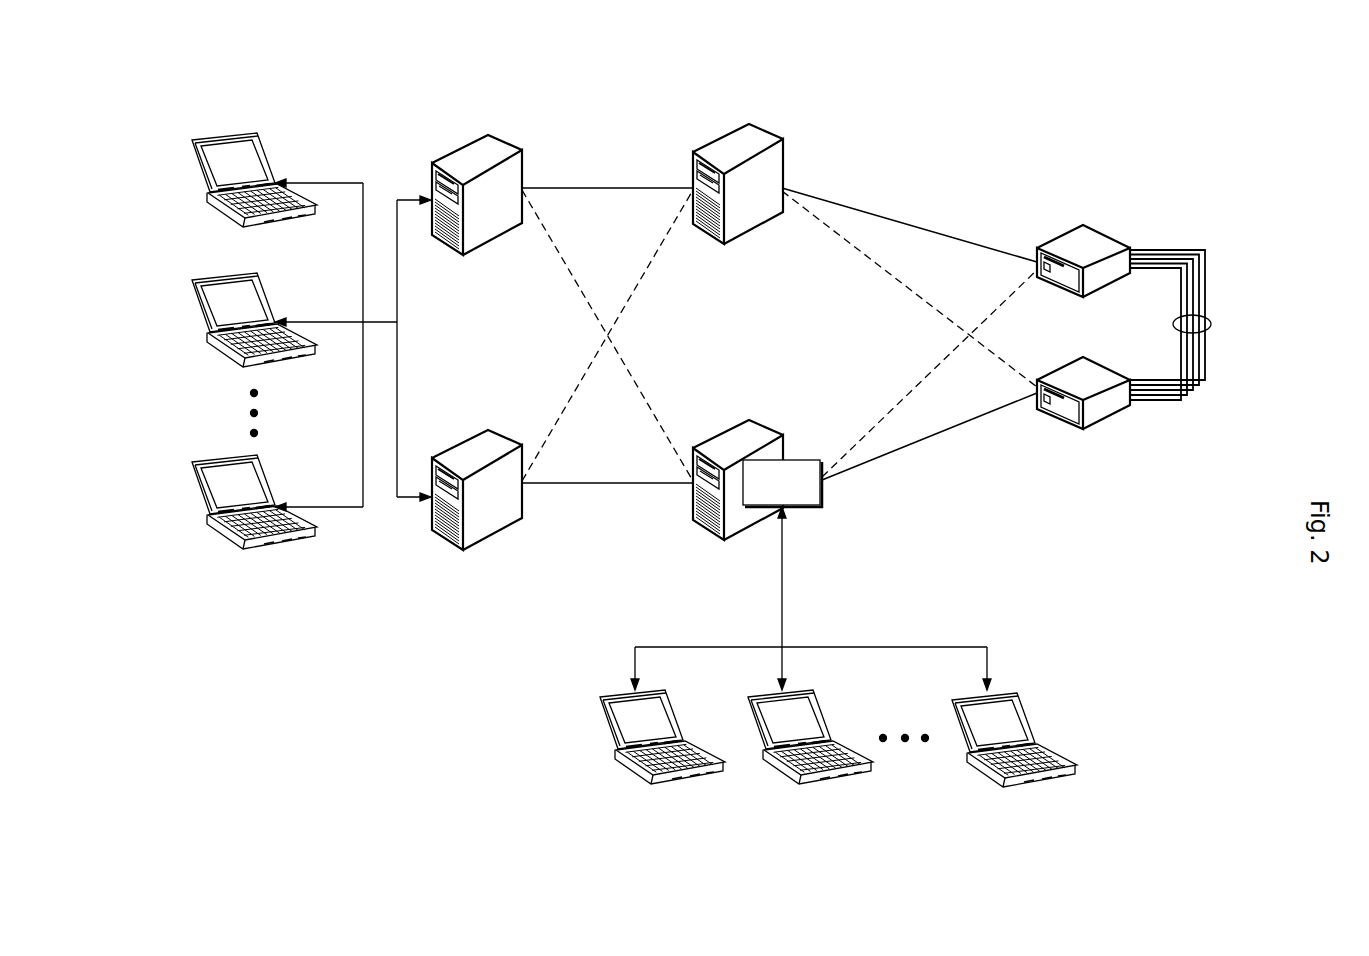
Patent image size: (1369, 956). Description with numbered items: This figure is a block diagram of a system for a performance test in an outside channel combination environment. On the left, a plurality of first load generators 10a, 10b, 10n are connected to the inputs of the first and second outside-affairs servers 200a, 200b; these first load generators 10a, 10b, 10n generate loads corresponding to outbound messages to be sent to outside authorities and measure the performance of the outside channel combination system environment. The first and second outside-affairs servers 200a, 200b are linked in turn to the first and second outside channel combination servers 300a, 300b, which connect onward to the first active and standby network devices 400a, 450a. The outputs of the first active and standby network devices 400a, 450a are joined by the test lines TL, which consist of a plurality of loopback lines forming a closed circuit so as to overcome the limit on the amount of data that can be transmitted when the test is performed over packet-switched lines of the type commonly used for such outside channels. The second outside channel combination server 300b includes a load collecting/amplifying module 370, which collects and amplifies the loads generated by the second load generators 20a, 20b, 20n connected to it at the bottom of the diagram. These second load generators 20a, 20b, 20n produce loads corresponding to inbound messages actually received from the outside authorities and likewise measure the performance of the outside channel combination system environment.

The first load generator 10a is at (194, 183).
The first load generator 10b is at (194, 323).
The first load generator 10n is at (194, 506).
The first outside-affairs server 200a is at (485, 133).
The second outside-affairs server 200b is at (485, 430).
The first outside channel combination server 300a is at (717, 120).
The second outside channel combination server 300b is at (717, 415).
The load collecting/amplifying module 370 is at (804, 508).
The first active network device 400a is at (1080, 223).
The first standby network device 450a is at (1083, 429).
The test lines TL is at (1212, 323).
The second load generator 20a is at (689, 783).
The second load generator 20b is at (837, 783).
The second load generator 20n is at (1041, 785).